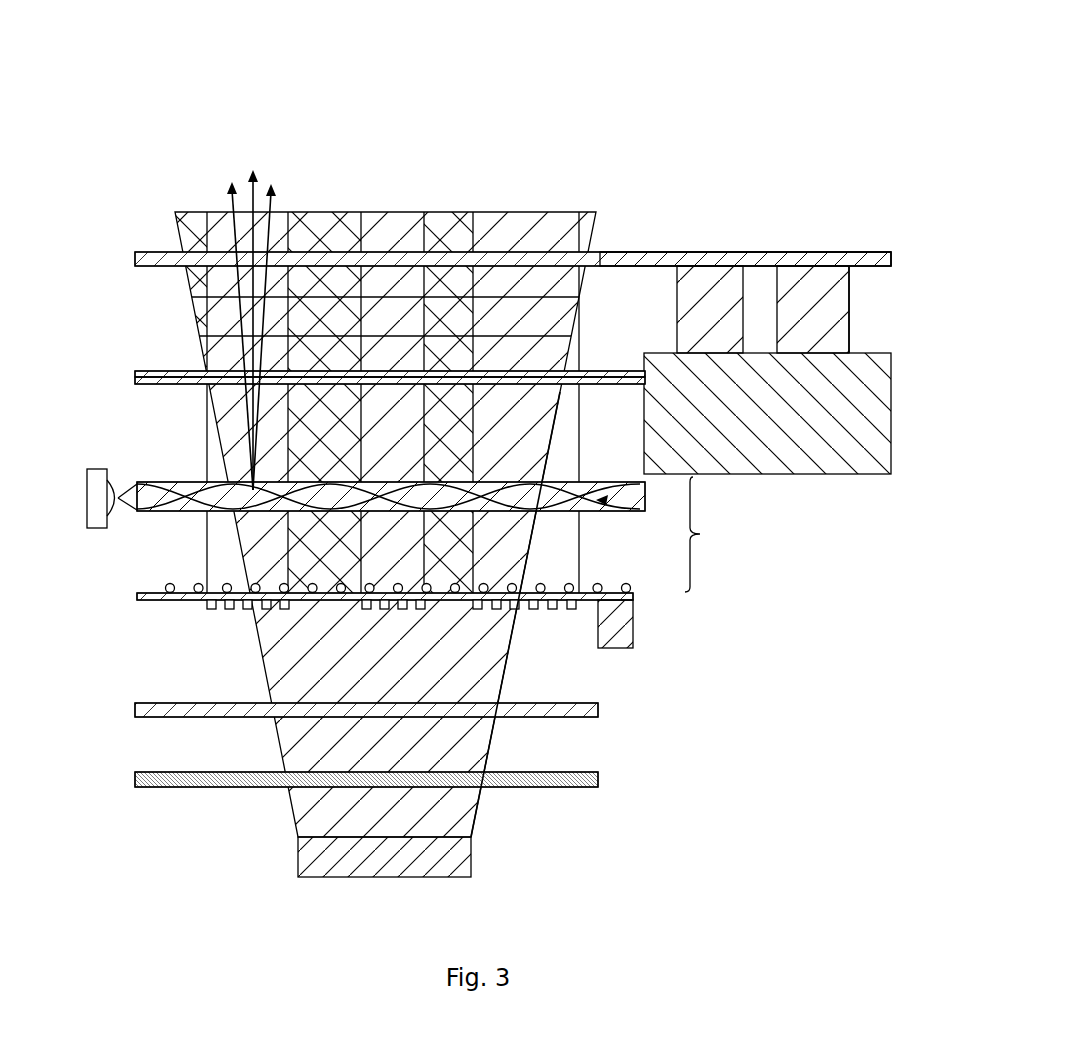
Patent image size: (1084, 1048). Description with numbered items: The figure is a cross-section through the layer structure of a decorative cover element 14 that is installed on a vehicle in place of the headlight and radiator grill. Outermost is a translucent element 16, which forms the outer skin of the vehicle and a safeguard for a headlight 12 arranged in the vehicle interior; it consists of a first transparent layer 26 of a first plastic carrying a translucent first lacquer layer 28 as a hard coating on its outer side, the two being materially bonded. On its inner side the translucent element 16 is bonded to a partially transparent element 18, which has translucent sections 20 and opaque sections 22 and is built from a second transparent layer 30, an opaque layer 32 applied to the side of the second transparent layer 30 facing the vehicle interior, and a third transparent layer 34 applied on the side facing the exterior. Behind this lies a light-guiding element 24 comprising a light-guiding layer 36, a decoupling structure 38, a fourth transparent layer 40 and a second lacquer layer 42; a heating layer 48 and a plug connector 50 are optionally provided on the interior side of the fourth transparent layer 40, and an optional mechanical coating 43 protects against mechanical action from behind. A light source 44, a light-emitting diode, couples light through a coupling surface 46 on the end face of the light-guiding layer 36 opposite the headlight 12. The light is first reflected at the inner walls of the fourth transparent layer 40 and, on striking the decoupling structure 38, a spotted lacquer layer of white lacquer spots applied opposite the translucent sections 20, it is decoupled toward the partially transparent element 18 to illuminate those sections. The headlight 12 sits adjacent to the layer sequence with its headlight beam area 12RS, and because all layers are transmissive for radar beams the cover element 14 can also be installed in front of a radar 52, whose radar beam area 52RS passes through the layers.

The decorative cover element 14 is at (502, 489).
The translucent element 16 is at (135, 260).
The partially transparent element 18 is at (344, 361).
The translucent sections 20 is at (233, 393).
The opaque sections 22 is at (185, 371).
The light-guiding element 24 is at (712, 537).
The first transparent layer 26 is at (876, 252).
The first lacquer layer 28 is at (762, 251).
The second transparent layer 30 is at (135, 374).
The opaque layer 32 is at (135, 383).
The third transparent layer 34 is at (142, 371).
The light-guiding layer 36 is at (118, 510).
The decoupling structure 38 is at (212, 608).
The fourth transparent layer 40 is at (137, 597).
The second lacquer layer 42 is at (135, 710).
The mechanical coating 43 is at (135, 779).
The light source 44 is at (87, 484).
The coupling surface 46 is at (140, 484).
The heating layer 48 is at (198, 590).
The plug connector 50 is at (623, 620).
The radar 52 is at (388, 878).
The radar beam area 52RS is at (473, 813).
The headlight 12 is at (778, 462).
The headlight beam area 12RS is at (852, 287).